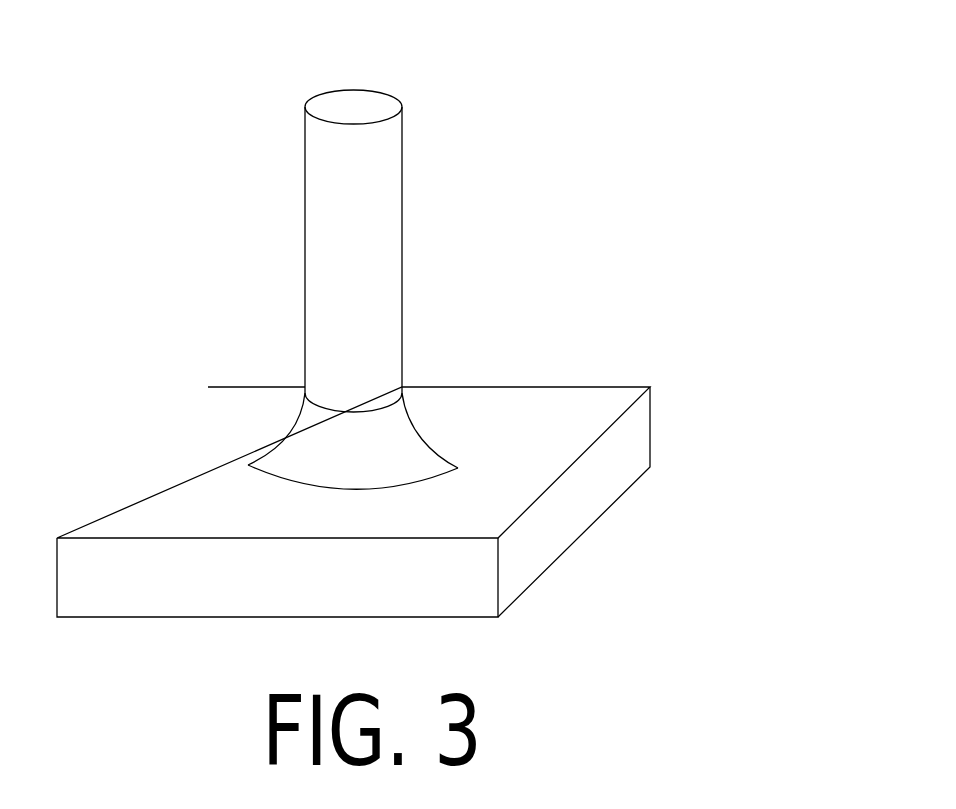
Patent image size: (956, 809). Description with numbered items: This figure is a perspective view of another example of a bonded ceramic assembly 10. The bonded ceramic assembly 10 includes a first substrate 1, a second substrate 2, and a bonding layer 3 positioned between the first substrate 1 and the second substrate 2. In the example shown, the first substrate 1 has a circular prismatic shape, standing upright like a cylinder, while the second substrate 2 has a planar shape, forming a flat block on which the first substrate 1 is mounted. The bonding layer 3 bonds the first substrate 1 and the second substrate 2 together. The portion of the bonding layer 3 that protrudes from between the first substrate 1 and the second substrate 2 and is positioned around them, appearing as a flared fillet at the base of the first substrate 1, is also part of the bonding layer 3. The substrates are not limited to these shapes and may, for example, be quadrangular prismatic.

The bonded ceramic assembly 10 is at (402, 82).
The first substrate 1 is at (363, 245).
The second substrate 2 is at (537, 433).
The bonding layer 3 is at (392, 449).